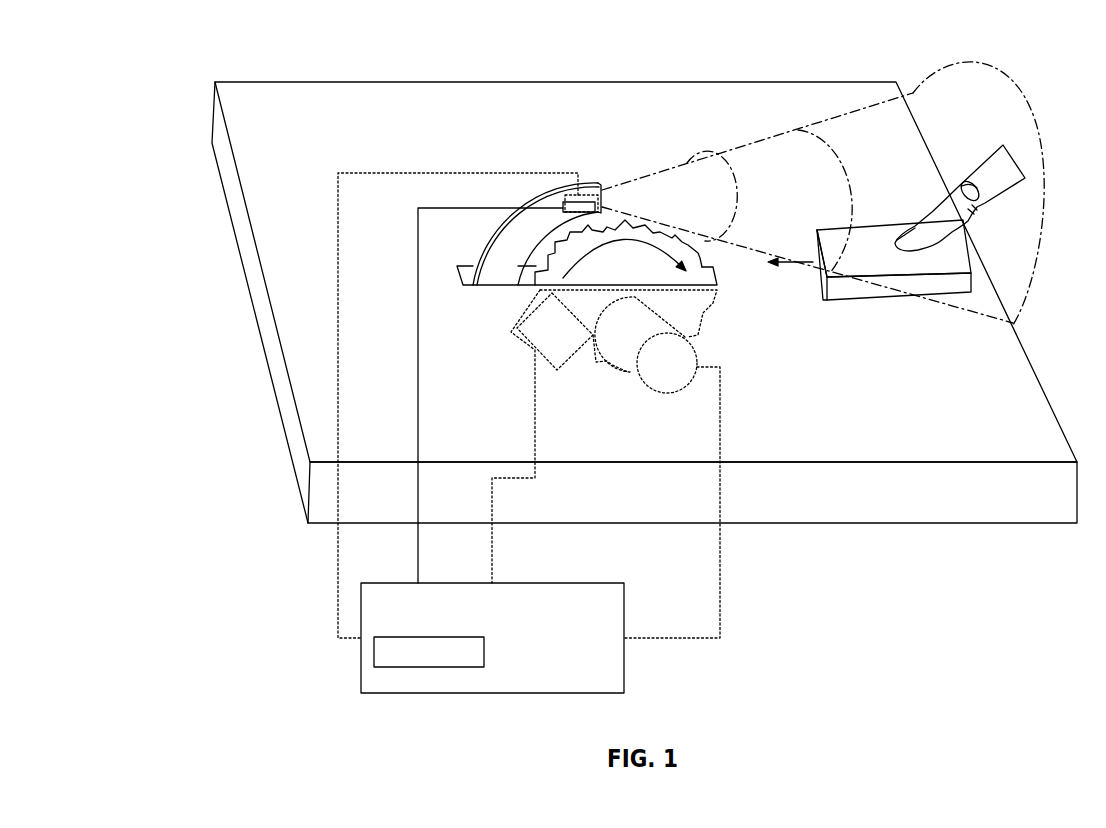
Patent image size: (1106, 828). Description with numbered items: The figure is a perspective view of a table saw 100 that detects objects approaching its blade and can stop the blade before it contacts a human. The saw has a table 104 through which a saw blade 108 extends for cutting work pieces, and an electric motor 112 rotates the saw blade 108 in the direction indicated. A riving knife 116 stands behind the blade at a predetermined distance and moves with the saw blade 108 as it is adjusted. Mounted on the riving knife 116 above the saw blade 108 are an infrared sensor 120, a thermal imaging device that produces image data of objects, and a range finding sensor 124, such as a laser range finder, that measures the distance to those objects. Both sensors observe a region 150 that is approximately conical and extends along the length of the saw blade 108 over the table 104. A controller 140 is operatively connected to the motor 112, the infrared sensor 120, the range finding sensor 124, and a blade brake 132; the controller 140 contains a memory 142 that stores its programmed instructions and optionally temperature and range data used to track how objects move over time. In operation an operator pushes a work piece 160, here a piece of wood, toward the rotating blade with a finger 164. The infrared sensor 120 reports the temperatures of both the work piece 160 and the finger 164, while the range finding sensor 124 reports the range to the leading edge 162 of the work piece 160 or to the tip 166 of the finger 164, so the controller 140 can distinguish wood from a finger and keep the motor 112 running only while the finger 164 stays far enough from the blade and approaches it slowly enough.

The table saw 100 is at (883, 575).
The table 104 is at (435, 82).
The saw blade 108 is at (703, 261).
The electric motor 112 is at (697, 360).
The riving knife 116 is at (487, 244).
The infrared sensor 120 is at (587, 196).
The range finding sensor 124 is at (563, 209).
The blade brake 132 is at (517, 330).
The controller 140 is at (540, 583).
The memory 142 is at (487, 657).
The region 150 is at (1047, 208).
The work piece 160 is at (818, 228).
The leading edge 162 is at (815, 245).
The finger 164 is at (957, 183).
The tip 166 is at (895, 232).